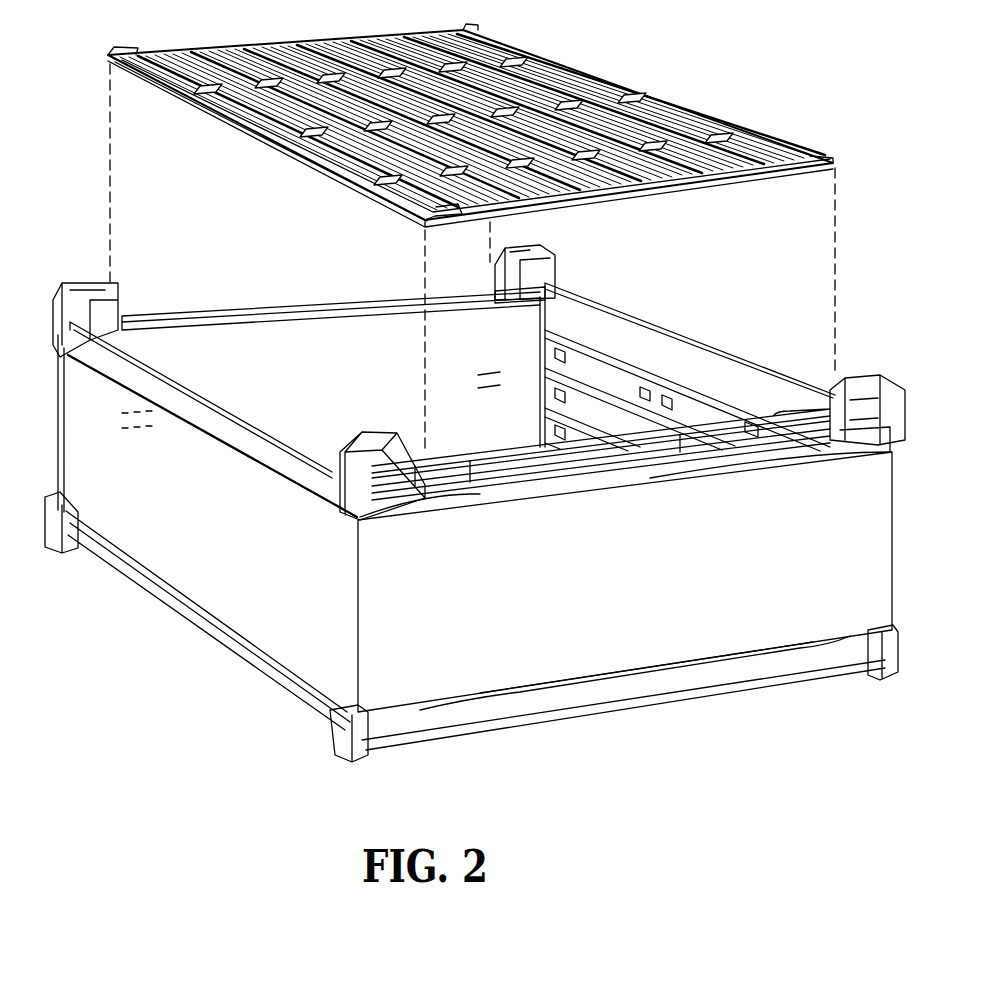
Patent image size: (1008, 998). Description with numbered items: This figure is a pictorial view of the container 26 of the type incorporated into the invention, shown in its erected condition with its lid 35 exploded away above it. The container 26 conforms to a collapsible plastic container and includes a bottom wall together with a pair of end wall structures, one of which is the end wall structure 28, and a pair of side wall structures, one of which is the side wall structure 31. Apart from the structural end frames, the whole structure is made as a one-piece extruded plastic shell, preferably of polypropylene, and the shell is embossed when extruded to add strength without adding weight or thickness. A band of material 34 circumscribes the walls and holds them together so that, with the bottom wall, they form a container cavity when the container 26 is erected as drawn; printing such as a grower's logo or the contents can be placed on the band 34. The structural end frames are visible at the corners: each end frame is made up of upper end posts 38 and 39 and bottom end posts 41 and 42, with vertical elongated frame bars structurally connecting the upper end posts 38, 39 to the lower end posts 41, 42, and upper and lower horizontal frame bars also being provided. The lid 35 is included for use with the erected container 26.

The container 26 is at (848, 291).
The end wall structure 28 is at (332, 398).
The side wall structure 31 is at (685, 365).
The band of material 34 is at (648, 602).
The lid 35 is at (615, 75).
The upper end post 38 is at (112, 295).
The upper end post 39 is at (523, 258).
The bottom end post 41 is at (405, 722).
The bottom end post 42 is at (865, 660).